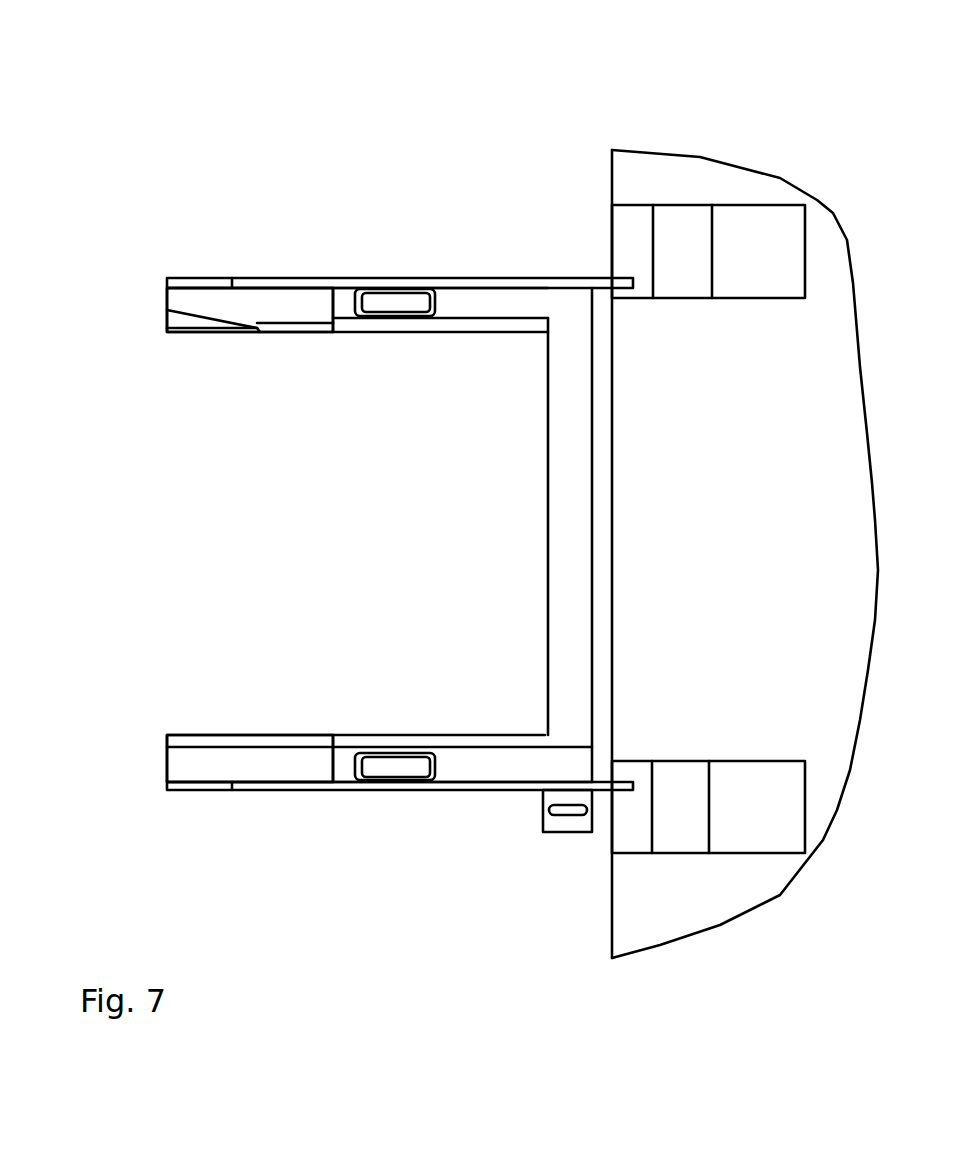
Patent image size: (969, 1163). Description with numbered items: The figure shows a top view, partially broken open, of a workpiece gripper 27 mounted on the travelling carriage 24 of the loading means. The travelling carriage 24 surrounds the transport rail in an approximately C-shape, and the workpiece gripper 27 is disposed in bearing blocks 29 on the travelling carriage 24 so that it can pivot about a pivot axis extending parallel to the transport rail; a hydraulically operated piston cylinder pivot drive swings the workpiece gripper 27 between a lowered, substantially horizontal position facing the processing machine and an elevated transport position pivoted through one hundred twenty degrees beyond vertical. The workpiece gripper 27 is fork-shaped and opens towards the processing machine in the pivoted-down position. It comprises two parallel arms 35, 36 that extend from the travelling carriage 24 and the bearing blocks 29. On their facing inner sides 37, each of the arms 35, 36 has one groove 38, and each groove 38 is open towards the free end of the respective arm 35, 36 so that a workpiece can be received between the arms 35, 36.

The travelling carriage 24 is at (600, 894).
The workpiece gripper 27 is at (339, 104).
The bearing blocks 29 is at (620, 220).
The arm 35 is at (180, 297).
The arm 36 is at (175, 762).
The inner sides 37 is at (260, 337).
The groove 38 is at (203, 337).